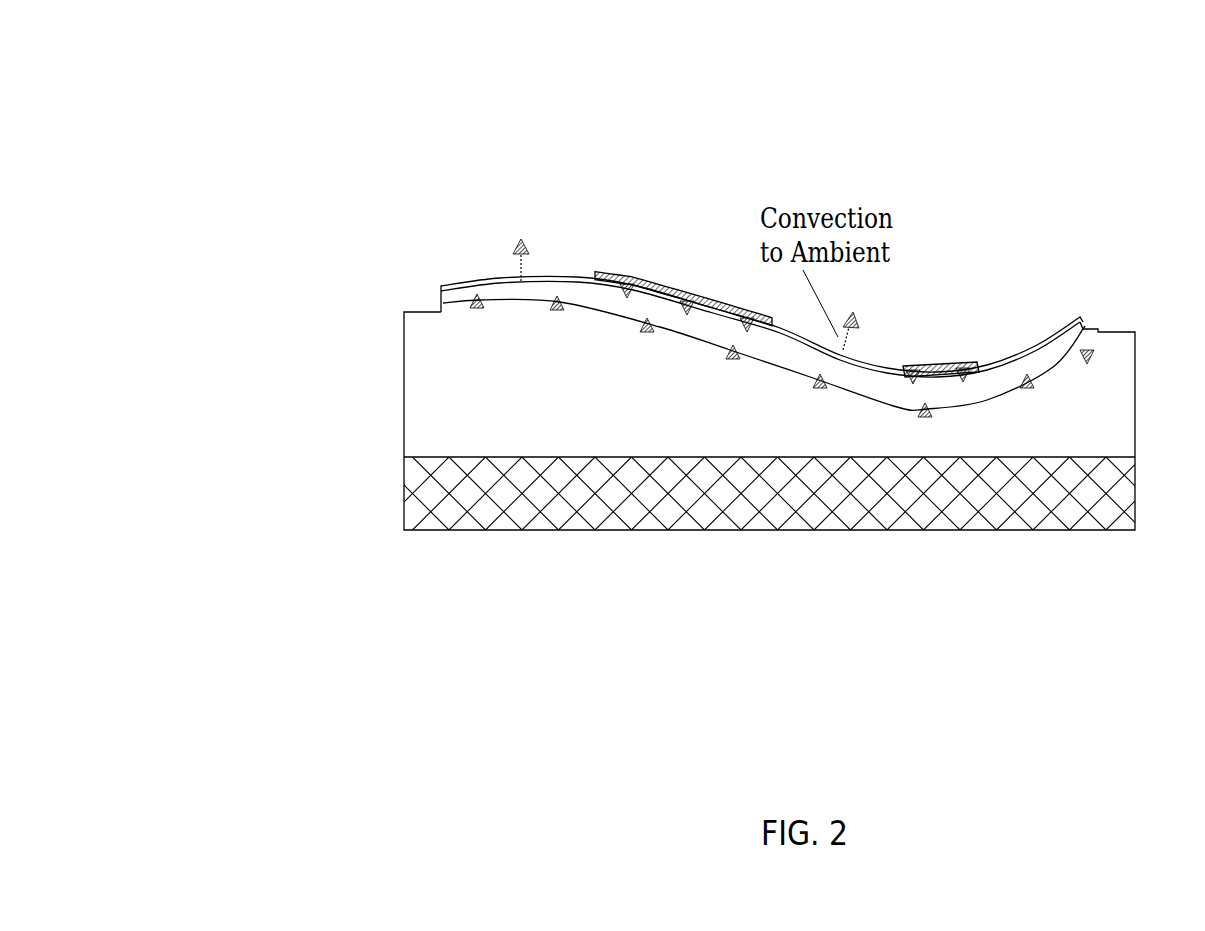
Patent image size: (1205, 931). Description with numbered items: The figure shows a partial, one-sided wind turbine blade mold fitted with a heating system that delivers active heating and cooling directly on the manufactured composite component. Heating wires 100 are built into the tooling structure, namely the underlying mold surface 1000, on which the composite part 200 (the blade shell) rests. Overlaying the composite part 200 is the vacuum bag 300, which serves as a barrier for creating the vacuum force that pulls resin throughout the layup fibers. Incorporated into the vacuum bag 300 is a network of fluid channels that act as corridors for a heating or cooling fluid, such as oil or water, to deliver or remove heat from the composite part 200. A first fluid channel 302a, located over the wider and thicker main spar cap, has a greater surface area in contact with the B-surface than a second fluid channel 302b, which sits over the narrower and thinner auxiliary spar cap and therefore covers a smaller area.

The heating wires 100 is at (638, 333).
The composite part 200 is at (988, 387).
The vacuum bag 300 is at (577, 283).
The first fluid channel 302a is at (662, 270).
The second fluid channel 302b is at (945, 355).
The mold surface 1000 is at (402, 436).